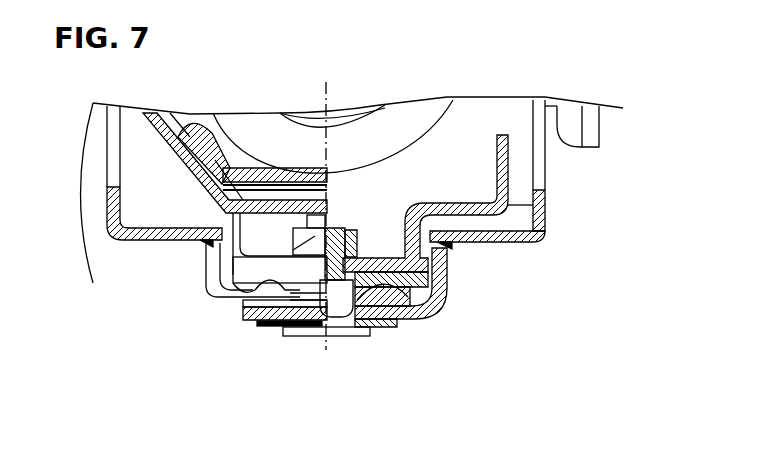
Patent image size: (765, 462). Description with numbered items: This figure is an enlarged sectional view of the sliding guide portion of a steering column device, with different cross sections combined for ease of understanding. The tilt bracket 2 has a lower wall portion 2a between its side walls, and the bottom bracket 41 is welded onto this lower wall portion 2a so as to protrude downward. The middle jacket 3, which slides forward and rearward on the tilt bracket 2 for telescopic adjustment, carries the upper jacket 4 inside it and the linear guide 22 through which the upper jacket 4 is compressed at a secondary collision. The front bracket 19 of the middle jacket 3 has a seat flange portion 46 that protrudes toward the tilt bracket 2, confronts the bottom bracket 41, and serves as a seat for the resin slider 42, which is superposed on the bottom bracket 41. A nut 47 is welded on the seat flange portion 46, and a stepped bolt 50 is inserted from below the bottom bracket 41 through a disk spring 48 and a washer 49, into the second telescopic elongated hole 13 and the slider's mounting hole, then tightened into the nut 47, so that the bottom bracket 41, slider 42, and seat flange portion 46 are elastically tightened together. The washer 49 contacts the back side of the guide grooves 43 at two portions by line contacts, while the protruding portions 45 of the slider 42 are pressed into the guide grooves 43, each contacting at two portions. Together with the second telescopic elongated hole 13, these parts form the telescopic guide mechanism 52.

The tilt bracket 2 is at (133, 250).
The lower wall portion 2a is at (463, 243).
The middle jacket 3 is at (183, 202).
The upper jacket 4 is at (203, 128).
The second telescopic elongated hole 13 is at (350, 292).
The front bracket 19 is at (534, 200).
The linear guide 22 is at (178, 150).
The bottom bracket 41 is at (206, 300).
The slider 42 is at (226, 300).
The guide grooves 43 is at (287, 306).
The protruding portions 45 is at (268, 325).
The seat flange portion 46 is at (477, 242).
The nut 47 is at (380, 226).
The disk spring 48 is at (372, 330).
The washer 49 is at (306, 318).
The bolt 50 is at (327, 345).
The telescopic guide mechanism 52 is at (277, 338).